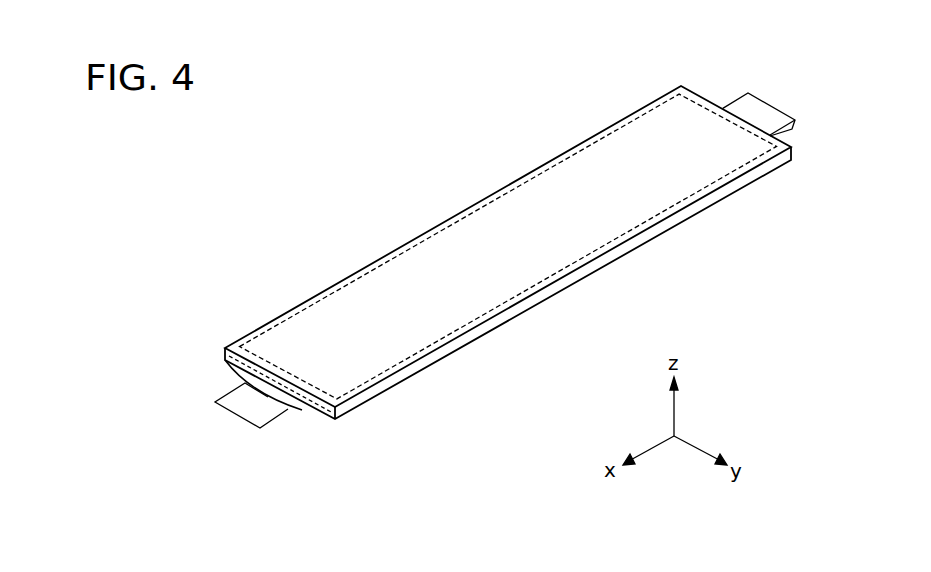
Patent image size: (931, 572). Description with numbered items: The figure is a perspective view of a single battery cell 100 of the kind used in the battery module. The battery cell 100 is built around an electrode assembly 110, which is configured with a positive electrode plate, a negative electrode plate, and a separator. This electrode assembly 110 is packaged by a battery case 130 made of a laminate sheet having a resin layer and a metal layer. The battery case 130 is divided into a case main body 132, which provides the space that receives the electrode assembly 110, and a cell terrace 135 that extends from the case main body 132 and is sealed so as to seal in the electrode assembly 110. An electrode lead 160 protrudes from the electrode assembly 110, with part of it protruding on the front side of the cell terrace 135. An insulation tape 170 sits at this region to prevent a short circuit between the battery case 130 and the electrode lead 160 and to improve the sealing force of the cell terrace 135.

The battery cell 100 is at (483, 317).
The electrode assembly 110 is at (367, 265).
The battery case 130 is at (508, 317).
The case main body 132 is at (400, 352).
The cell terrace 135 is at (300, 411).
The electrode lead 160 is at (217, 404).
The insulation tape 170 is at (279, 407).